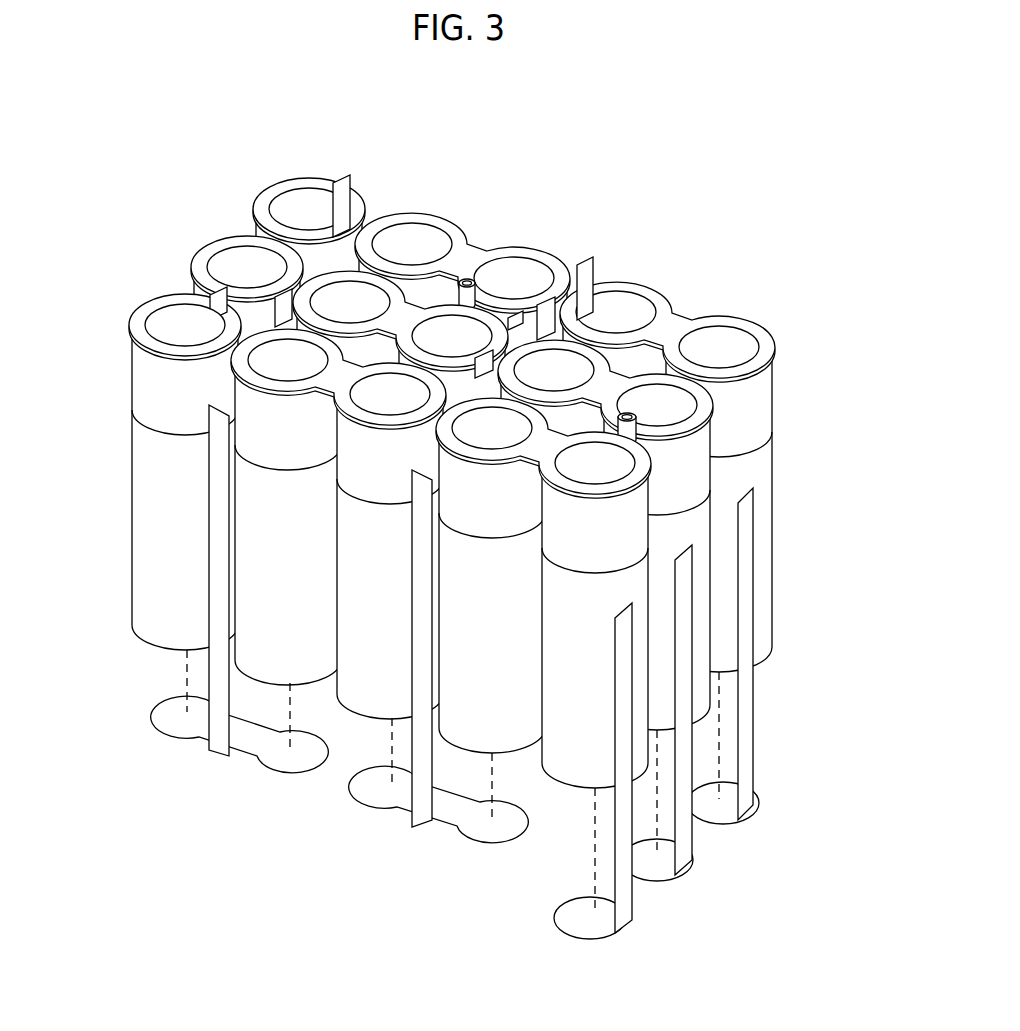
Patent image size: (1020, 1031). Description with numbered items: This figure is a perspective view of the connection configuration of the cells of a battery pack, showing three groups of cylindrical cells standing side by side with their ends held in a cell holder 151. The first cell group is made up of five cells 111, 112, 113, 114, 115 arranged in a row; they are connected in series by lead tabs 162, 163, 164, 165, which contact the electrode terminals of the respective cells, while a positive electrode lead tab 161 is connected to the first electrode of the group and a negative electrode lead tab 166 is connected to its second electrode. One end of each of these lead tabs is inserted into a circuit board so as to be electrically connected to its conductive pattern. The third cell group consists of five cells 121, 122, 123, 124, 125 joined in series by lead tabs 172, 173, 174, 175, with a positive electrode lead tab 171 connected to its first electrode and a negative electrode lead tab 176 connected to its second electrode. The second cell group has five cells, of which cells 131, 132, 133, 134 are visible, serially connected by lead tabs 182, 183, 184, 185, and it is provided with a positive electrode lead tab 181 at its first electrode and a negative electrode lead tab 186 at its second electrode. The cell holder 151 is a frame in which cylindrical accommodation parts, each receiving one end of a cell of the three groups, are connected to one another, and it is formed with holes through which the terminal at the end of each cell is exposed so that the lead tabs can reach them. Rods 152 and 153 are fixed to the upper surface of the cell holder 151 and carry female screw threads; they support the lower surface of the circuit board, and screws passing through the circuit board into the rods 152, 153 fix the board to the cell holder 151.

The cell 111 is at (578, 770).
The cell 112 is at (471, 733).
The cell 113 is at (368, 698).
The cell 114 is at (277, 664).
The cell 115 is at (152, 632).
The cell 121 is at (703, 663).
The cell 122 is at (683, 324).
The cell 123 is at (268, 366).
The cell 124 is at (320, 285).
The cell 125 is at (235, 245).
The cell 131 is at (772, 620).
The cell 132 is at (650, 305).
The cell 133 is at (528, 262).
The cell 134 is at (440, 232).
The cell holder 151 is at (773, 380).
The rod 152 is at (655, 440).
The rod 153 is at (472, 282).
The positive electrode lead tab 161 is at (600, 926).
The lead tab 162 is at (588, 472).
The lead tab 163 is at (476, 832).
The lead tab 164 is at (385, 402).
The lead tab 165 is at (275, 758).
The negative electrode lead tab 166 is at (172, 323).
The positive electrode lead tab 171 is at (667, 870).
The lead tab 172 is at (642, 432).
The lead tab 173 is at (488, 372).
The lead tab 174 is at (367, 300).
The lead tab 175 is at (282, 304).
The negative electrode lead tab 176 is at (233, 263).
The positive electrode lead tab 181 is at (720, 818).
The lead tab 182 is at (630, 308).
The lead tab 183 is at (556, 318).
The lead tab 184 is at (450, 222).
The lead tab 185 is at (352, 240).
The negative electrode lead tab 186 is at (298, 195).